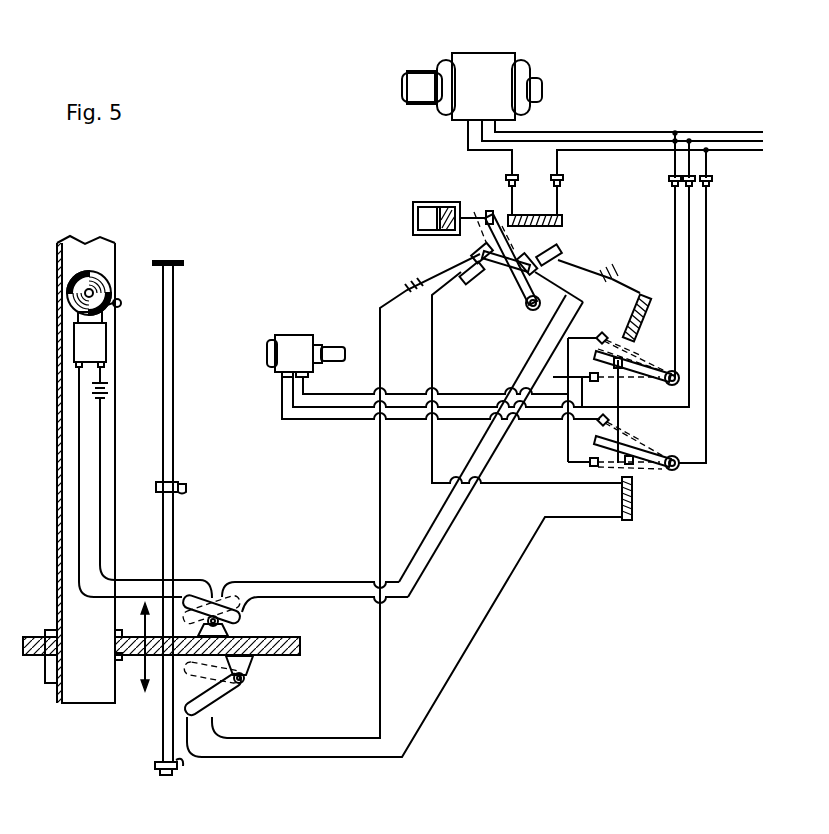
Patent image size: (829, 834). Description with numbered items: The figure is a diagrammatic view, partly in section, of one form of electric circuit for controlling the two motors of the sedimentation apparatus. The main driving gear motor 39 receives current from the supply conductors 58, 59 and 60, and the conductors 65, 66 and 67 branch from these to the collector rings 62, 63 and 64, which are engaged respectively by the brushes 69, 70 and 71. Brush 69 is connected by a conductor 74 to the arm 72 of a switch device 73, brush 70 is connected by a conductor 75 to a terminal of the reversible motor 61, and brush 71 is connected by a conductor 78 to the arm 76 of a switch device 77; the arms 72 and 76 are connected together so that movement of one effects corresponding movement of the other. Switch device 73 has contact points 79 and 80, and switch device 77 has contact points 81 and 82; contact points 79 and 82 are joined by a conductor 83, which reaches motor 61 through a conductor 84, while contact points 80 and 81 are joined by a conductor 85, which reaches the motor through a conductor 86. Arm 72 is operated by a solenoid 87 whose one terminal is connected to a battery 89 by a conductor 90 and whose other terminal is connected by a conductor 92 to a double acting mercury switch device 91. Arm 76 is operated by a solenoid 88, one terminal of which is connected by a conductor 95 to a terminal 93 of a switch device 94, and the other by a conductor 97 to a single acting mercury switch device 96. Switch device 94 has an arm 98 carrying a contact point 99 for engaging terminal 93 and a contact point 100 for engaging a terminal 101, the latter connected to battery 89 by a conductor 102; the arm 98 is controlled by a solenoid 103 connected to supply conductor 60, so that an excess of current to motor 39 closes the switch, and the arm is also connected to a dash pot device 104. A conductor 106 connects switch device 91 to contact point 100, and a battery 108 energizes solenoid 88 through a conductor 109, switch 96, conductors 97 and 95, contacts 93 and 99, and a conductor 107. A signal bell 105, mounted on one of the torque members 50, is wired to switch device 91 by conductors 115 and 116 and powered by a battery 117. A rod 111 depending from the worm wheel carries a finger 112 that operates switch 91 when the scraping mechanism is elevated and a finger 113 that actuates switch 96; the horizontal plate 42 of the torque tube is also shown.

The electric motor 39 is at (482, 63).
The plate 42 is at (300, 643).
The torque members 50 is at (57, 520).
The conductor 58 is at (552, 132).
The conductor 59 is at (590, 141).
The conductor 60 is at (587, 150).
The reversible electric motor 61 is at (292, 336).
The collector ring 62 is at (669, 178).
The collector ring 63 is at (695, 177).
The collector ring 64 is at (712, 181).
The conductor 65 is at (673, 156).
The conductor 66 is at (689, 143).
The conductor 67 is at (708, 150).
The brush 69 is at (672, 186).
The brush 70 is at (688, 187).
The brush 71 is at (709, 187).
The arm 72 is at (632, 357).
The switch device 73 is at (644, 382).
The conductor 74 is at (675, 240).
The conductor 75 is at (292, 395).
The arm 76 is at (592, 443).
The switch device 77 is at (674, 458).
The conductor 78 is at (706, 275).
The contact point 79 is at (601, 336).
The contact point 80 is at (561, 384).
The contact point 81 is at (612, 422).
The contact point 82 is at (590, 466).
The conductor 83 is at (568, 436).
The conductor 84 is at (470, 394).
The conductor 85 is at (582, 397).
The conductor 86 is at (322, 419).
The solenoid 87 is at (640, 312).
The solenoid 88 is at (634, 500).
The battery 89 is at (616, 276).
The conductor 90 is at (624, 282).
The double acting mercury switch device 91 is at (245, 613).
The conductor 92 is at (444, 538).
The terminal 93 is at (474, 283).
The switch device 94 is at (513, 282).
The conductor 95 is at (433, 347).
The single acting mercury switch device 96 is at (232, 704).
The conductor 97 is at (458, 665).
The arm 98 is at (488, 211).
The contact point 99 is at (472, 253).
The contact point 100 is at (538, 271).
The terminal 101 is at (556, 246).
The conductor 102 is at (572, 260).
The solenoid 103 is at (536, 200).
The dash pot device 104 is at (440, 188).
The signal device 105 is at (95, 342).
The conductor 106 is at (429, 530).
The conductor 107 is at (430, 277).
The battery 108 is at (402, 290).
The conductor 109 is at (380, 493).
The rod 111 is at (185, 392).
The finger 112 is at (200, 481).
The finger 113 is at (183, 770).
The conductor 115 is at (100, 423).
The conductor 116 is at (80, 458).
The battery 117 is at (120, 387).